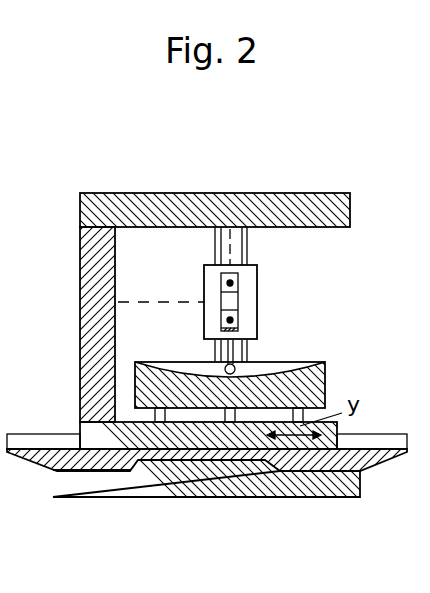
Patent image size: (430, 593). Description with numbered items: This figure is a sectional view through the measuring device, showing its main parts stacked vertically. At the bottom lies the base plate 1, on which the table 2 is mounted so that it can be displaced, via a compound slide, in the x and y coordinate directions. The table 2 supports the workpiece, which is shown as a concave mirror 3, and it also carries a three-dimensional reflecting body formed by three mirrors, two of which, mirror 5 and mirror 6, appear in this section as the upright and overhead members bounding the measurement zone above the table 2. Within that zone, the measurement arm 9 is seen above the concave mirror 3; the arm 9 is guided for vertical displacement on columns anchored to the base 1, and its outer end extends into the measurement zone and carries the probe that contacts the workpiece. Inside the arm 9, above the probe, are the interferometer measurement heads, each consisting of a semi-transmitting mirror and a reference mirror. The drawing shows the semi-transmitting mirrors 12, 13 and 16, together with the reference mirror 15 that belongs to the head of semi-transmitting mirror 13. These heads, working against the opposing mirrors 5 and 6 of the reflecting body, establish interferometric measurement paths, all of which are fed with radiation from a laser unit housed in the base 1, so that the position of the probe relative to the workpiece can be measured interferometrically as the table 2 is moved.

The base plate 1 is at (242, 498).
The table 2 is at (88, 428).
The concave mirror 3 is at (323, 380).
The mirror 5 is at (92, 243).
The mirror 6 is at (168, 210).
The measurement arm 9 is at (257, 300).
The semi-transmitting mirror 12 is at (236, 283).
The semi-transmitting mirror 13 is at (237, 320).
The reference mirror 15 is at (222, 332).
The semi-transmitting mirror 16 is at (232, 302).